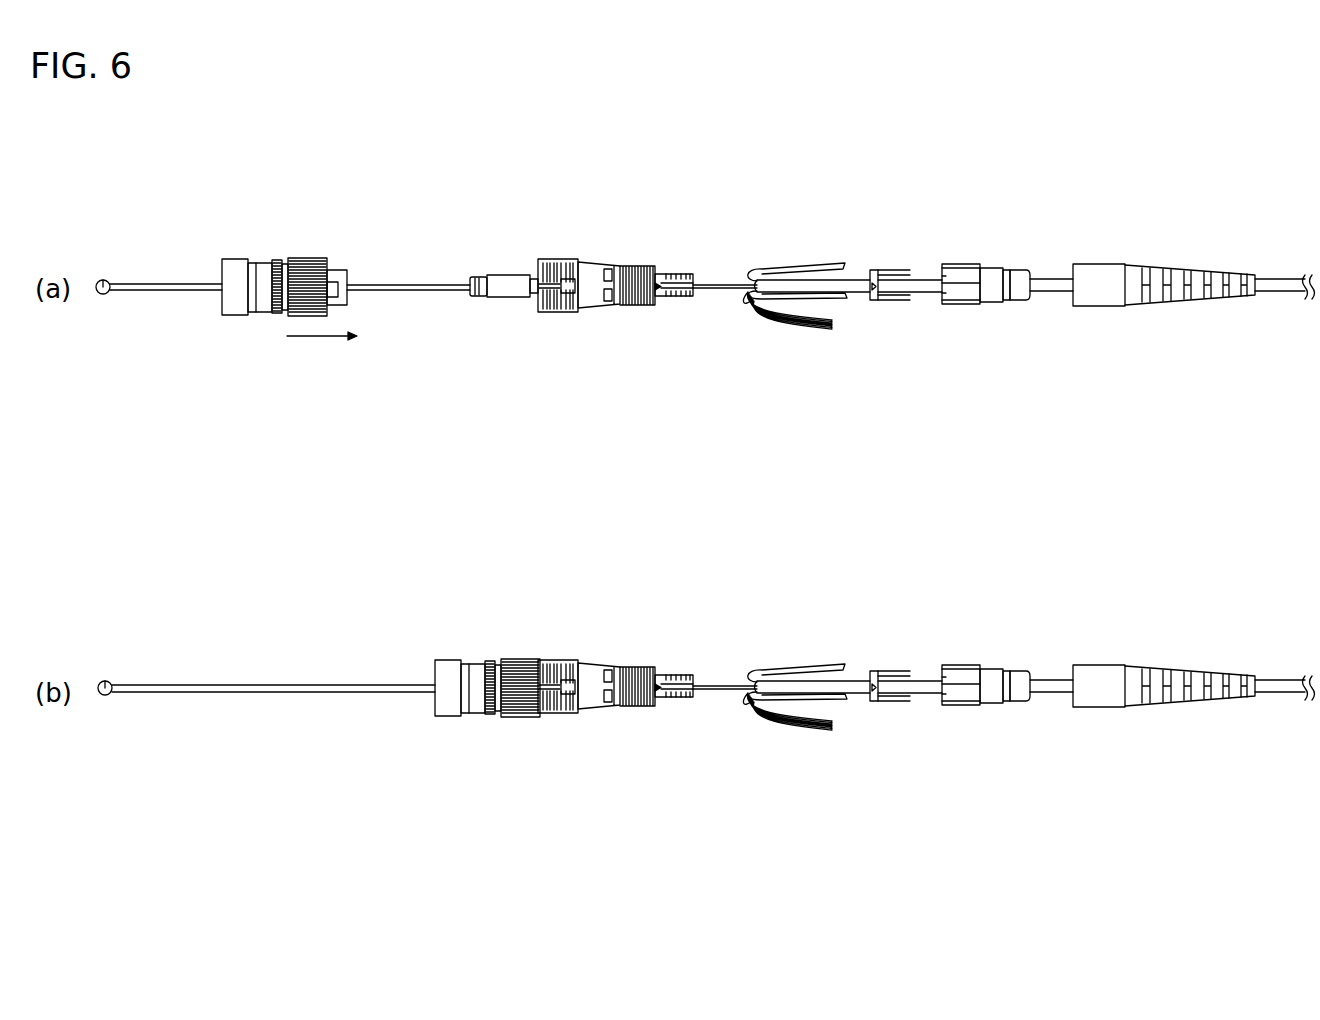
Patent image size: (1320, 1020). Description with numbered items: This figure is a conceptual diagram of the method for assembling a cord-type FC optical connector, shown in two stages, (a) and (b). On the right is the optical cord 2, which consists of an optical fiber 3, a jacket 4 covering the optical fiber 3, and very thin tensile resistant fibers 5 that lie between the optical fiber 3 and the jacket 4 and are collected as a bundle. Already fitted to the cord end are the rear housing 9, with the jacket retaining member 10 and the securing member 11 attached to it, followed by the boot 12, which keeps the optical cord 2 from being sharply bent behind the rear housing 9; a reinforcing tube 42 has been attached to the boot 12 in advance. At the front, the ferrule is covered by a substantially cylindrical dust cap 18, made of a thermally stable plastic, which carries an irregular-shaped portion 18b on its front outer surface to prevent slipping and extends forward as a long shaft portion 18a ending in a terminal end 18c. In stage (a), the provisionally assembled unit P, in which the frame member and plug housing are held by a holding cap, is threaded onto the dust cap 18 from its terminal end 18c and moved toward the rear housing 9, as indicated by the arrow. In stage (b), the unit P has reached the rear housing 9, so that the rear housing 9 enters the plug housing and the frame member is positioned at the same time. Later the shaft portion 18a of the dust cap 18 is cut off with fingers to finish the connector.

The optical cord 2 is at (861, 300).
The optical fiber 3 is at (713, 282).
The jacket 4 is at (833, 267).
The tensile resistant fibers 5 is at (805, 324).
The rear housing 9 is at (598, 268).
The jacket retaining member 10 is at (880, 270).
The securing member 11 is at (960, 268).
The boot 12 is at (1103, 278).
The reinforcing tube 42 is at (1283, 278).
The dust cap 18 is at (508, 275).
The shaft portion 18a is at (186, 283).
The irregular-shaped portion 18b is at (475, 300).
The terminal end 18c is at (103, 280).
The provisionally assembled unit P is at (277, 252).